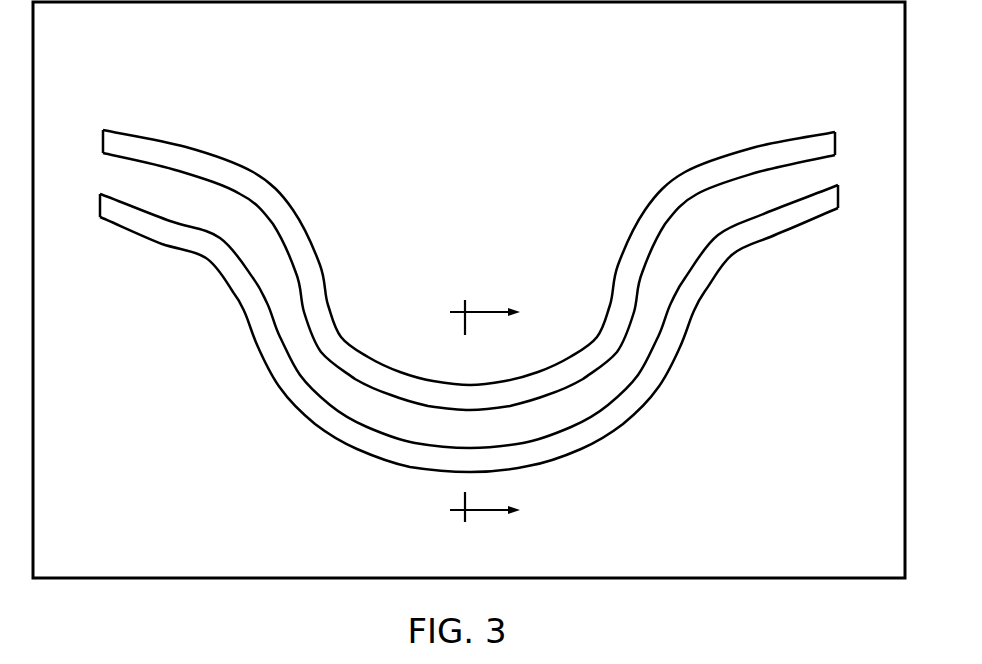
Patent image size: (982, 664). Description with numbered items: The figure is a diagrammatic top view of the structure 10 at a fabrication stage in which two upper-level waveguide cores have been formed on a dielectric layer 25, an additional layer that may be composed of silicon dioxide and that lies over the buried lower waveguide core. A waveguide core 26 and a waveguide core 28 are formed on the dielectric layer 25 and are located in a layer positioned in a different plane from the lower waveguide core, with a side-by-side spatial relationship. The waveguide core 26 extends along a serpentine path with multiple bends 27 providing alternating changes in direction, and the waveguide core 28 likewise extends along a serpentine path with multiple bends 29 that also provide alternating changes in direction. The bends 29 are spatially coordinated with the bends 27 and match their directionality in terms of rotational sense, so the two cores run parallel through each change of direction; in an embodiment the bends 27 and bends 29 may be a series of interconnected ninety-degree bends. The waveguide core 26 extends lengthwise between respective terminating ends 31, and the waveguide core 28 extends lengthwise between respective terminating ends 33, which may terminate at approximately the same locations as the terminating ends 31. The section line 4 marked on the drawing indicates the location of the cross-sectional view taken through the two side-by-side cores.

The composite assembly 10 is at (182, 62).
The dielectric layer 25 is at (106, 453).
The waveguide core 26 is at (636, 202).
The bends 27 is at (258, 197).
The waveguide core 28 is at (708, 321).
The bends 29 is at (170, 218).
The terminating ends 31 is at (103, 150).
The terminating ends 33 is at (100, 213).
The section line 4- 4 is at (498, 414).